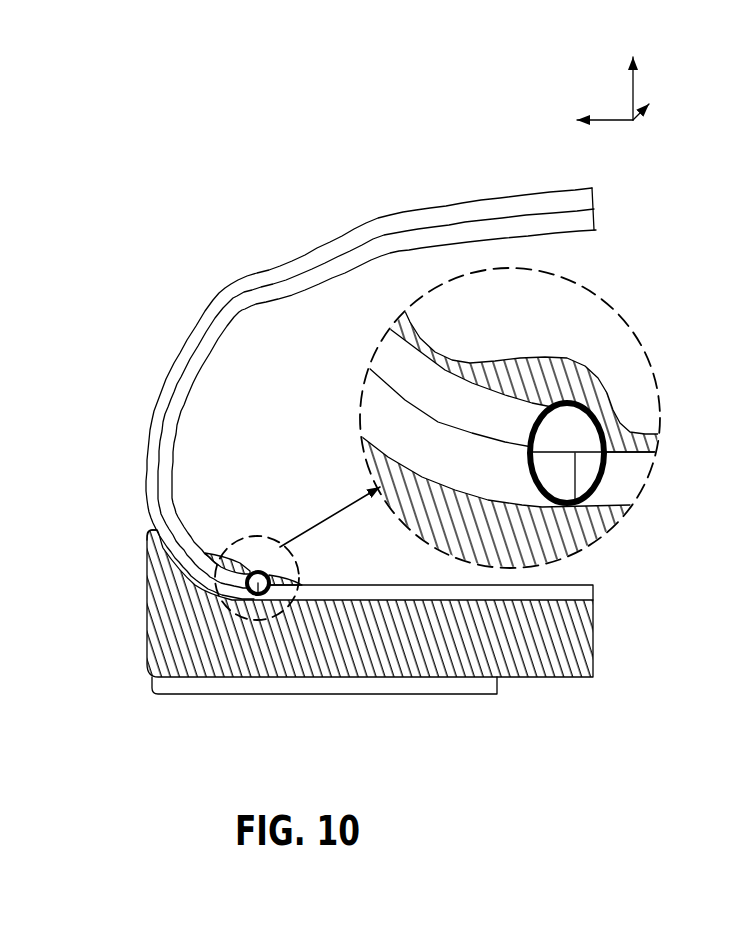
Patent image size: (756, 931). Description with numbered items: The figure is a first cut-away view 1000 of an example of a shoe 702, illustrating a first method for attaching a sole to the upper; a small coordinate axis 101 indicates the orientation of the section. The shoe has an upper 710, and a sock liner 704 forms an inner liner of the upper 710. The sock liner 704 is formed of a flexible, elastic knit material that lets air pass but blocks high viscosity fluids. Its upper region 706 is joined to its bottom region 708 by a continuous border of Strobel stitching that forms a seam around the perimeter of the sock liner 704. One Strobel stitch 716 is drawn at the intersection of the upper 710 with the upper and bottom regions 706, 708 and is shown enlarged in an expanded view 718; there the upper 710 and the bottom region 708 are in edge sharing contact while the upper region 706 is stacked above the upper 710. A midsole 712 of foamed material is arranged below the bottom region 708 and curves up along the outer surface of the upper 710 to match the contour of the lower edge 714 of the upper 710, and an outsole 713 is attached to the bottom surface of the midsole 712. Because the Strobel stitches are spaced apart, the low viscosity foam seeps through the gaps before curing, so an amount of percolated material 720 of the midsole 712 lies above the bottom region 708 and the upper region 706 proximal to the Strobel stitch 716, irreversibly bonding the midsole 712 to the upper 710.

The first cut-away view 1000 is at (230, 105).
The coordinate system 101 is at (688, 87).
The shoe 702 is at (248, 195).
The sock liner 704 is at (209, 371).
The upper region of the sock liner 706 is at (177, 433).
The bottom region of the sock liner 708 is at (338, 584).
The upper 710 is at (218, 298).
The midsole 712 is at (150, 602).
The outsole 713 is at (253, 695).
The lower edge of the upper 714 is at (152, 537).
The Strobel stitch 716 is at (258, 570).
The expanded view 718 is at (360, 414).
The percolated material 720 is at (285, 563).